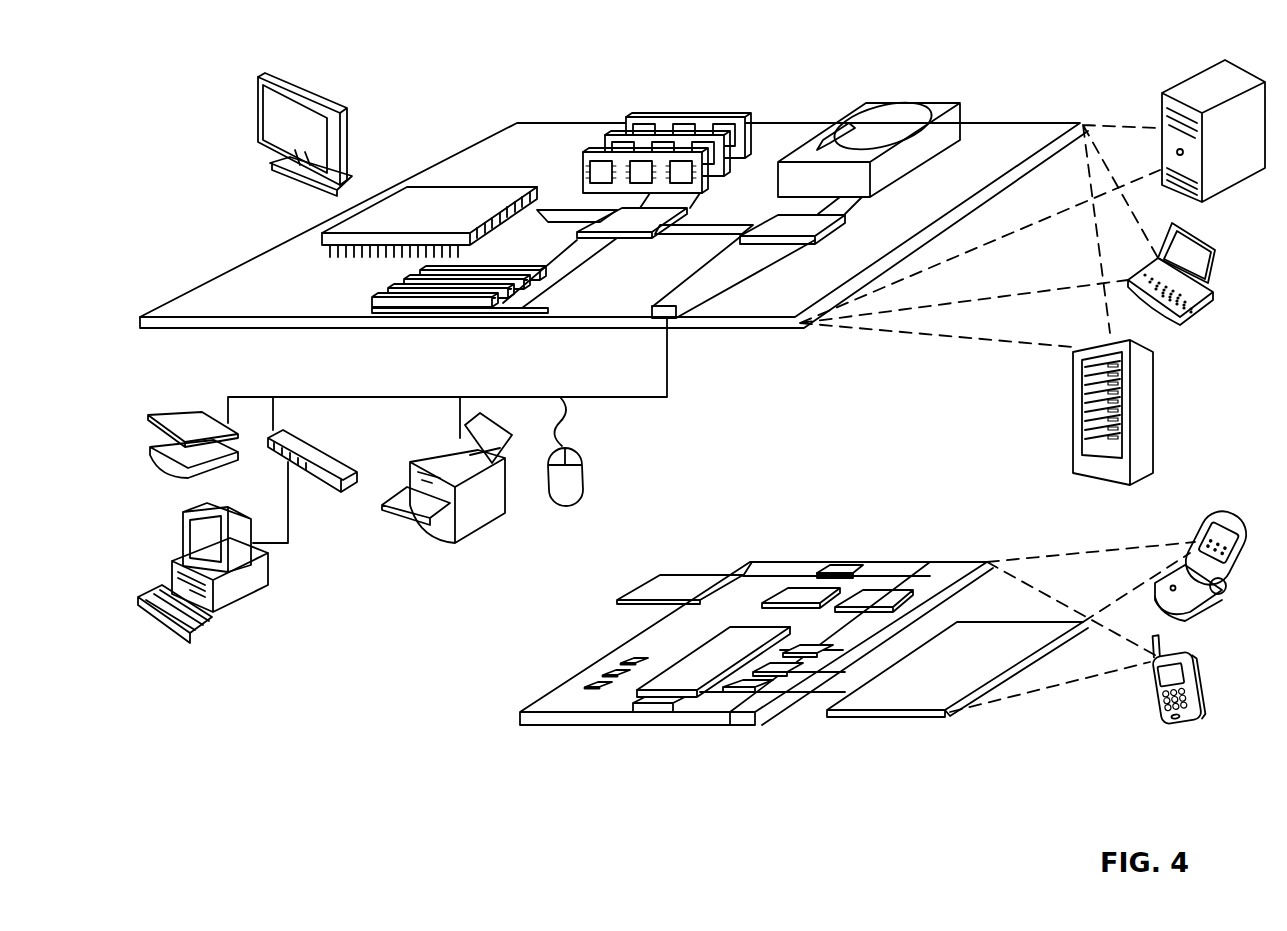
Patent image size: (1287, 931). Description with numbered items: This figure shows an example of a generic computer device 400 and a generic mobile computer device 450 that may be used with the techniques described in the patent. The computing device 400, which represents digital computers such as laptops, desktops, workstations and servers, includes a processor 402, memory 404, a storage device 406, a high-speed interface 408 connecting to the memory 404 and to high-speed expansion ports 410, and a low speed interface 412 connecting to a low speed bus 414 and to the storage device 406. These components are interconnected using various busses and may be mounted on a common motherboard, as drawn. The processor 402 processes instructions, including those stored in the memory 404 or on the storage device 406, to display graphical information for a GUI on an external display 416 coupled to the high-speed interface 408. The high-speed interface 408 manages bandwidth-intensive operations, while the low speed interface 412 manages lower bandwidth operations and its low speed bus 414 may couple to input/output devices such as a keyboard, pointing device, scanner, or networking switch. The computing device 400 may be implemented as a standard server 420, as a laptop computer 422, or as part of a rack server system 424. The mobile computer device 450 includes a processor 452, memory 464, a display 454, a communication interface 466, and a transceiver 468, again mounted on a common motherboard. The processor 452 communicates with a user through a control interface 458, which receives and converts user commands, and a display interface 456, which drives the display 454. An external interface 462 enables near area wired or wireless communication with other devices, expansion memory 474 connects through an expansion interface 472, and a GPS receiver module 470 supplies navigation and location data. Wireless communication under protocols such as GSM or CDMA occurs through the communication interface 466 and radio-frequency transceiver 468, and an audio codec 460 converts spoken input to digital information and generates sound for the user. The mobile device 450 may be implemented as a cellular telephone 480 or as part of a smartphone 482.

The computing device 400 is at (442, 90).
The processor 402 is at (330, 237).
The memory 404 is at (642, 157).
The storage device 406 is at (862, 108).
The high-speed interface 408 is at (600, 215).
The high-speed expansion ports 410 is at (393, 293).
The low speed interface 412 is at (778, 228).
The low speed bus 414 is at (673, 318).
The display 416 is at (270, 78).
The standard server 420 is at (1162, 110).
The laptop computer 422 is at (1222, 250).
The rack server system 424 is at (1072, 436).
The mobile computer device 450 is at (495, 725).
The processor 452 is at (687, 682).
The display 454 is at (912, 700).
The display interface 456 is at (760, 688).
The control interface 458 is at (790, 670).
The audio codec 460 is at (808, 652).
The external interface 462 is at (655, 712).
The memory 464 is at (607, 675).
The communication interface 466 is at (802, 598).
The transceiver 468 is at (873, 595).
The GPS receiver module 470 is at (848, 570).
The expansion interface 472 is at (740, 572).
The expansion memory 474 is at (740, 570).
The cellular telephone 480 is at (1207, 518).
The smartphone 482 is at (1153, 692).